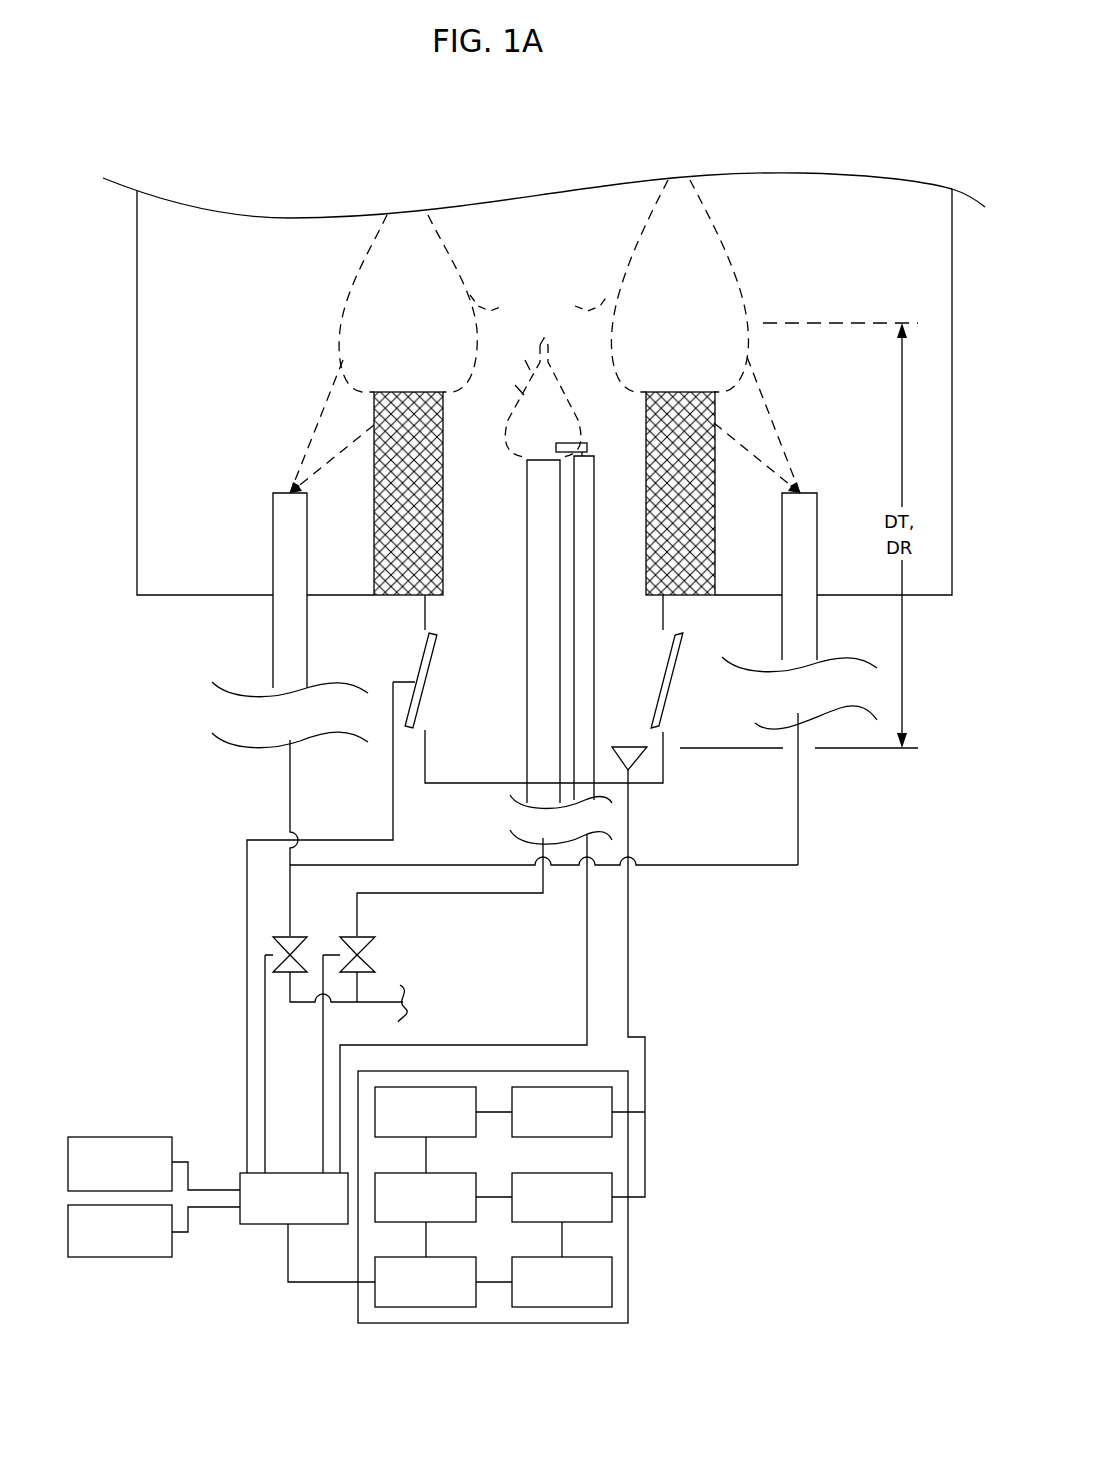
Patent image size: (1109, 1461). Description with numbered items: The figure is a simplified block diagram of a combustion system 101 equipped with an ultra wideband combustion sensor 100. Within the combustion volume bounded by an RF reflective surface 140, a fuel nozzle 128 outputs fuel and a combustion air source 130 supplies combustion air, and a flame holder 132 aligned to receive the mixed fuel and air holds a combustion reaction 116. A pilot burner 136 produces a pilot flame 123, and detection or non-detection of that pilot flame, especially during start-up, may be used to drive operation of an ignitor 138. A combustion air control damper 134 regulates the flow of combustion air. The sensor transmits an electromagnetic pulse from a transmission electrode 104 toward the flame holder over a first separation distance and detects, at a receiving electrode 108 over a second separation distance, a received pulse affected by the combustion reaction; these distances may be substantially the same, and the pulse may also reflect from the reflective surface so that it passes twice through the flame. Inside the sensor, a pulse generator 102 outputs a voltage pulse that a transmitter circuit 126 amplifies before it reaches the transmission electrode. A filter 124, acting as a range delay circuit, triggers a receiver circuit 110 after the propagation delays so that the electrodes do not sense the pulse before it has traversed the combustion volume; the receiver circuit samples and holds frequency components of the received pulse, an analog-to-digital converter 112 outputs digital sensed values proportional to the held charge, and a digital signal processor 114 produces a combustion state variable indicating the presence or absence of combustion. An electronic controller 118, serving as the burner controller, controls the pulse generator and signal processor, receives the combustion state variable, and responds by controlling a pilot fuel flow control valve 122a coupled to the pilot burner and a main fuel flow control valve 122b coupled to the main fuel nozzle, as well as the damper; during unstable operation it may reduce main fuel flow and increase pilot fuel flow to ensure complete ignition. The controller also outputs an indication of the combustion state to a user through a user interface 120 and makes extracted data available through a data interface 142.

The combustion system 101 is at (353, 158).
The RF reflective surface 140 is at (137, 408).
The combustion reaction 116 is at (543, 286).
The pilot flame 123 is at (539, 395).
The flame holder 132 is at (385, 392).
The fuel nozzle 128 is at (282, 493).
The pilot burner 136 is at (527, 483).
The ignitor 138 is at (590, 455).
The combustion air control damper 134 is at (425, 647).
The combustion air source 130 is at (470, 783).
The transmission electrode 104 is at (699, 972).
The receiving electrode 108 is at (652, 757).
The pilot fuel flow control valve 122a is at (373, 938).
The main fuel flow control valve 122b is at (270, 935).
The UWB combustion sensor 100 is at (508, 1071).
The pulse generator 102 is at (406, 1123).
The transmitter circuit 126 is at (582, 1123).
The filter 124 is at (406, 1208).
The receiver circuit 110 is at (582, 1208).
The digital signal processor 114 is at (406, 1293).
The analog-to-digital converter 112 is at (582, 1293).
The electronic controller 118 is at (274, 1209).
The data interface 142 is at (100, 1175).
The user interface 120 is at (100, 1242).